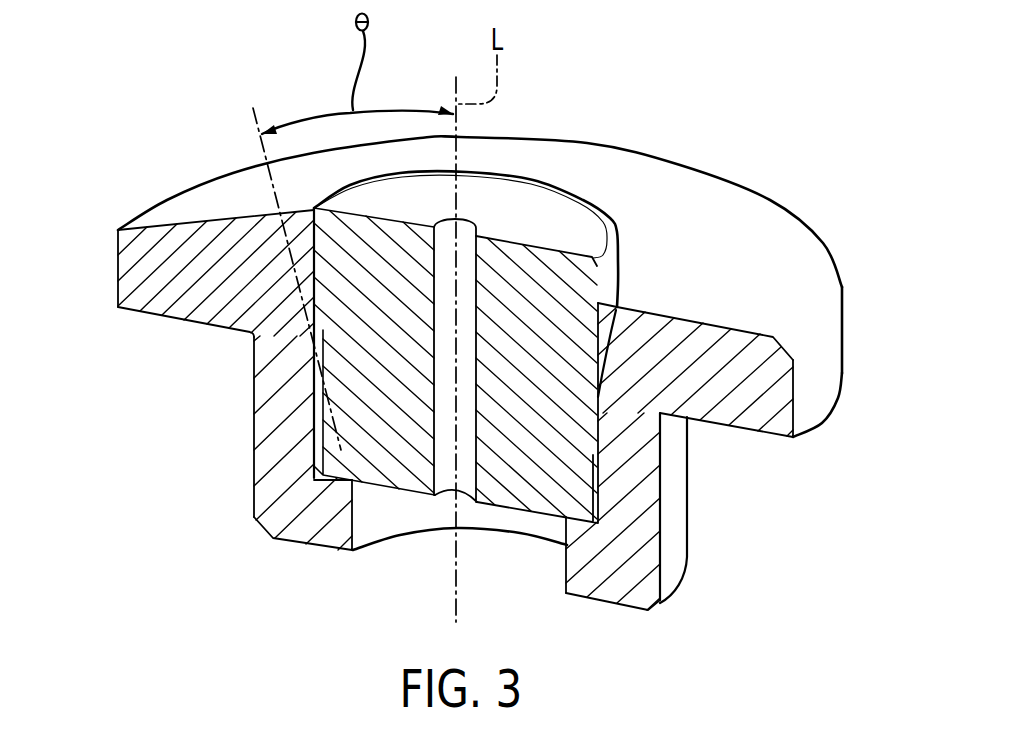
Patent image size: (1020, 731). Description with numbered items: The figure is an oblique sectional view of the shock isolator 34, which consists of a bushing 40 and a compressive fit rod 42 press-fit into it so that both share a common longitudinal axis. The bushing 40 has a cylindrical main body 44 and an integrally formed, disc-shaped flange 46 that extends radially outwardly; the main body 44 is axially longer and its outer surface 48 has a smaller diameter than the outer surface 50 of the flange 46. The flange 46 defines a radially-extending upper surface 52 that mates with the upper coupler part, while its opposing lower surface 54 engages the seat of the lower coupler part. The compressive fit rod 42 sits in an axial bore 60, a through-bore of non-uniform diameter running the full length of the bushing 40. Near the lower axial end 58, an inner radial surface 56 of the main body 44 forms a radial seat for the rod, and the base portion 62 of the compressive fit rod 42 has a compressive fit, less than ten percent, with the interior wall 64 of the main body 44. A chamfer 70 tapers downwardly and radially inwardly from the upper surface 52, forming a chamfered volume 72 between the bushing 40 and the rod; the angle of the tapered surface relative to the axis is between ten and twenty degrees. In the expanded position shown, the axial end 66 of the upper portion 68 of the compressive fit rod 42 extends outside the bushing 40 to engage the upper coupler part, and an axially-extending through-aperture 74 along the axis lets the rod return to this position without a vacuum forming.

The shock isolator 34 is at (262, 95).
The bushing 40 is at (195, 258).
The compressive fit rod 42 is at (332, 225).
The main body 44 is at (290, 398).
The flange 46 is at (147, 277).
The outer surface 48 is at (686, 480).
The outer surface 50 is at (812, 373).
The upper surface 52 is at (778, 273).
The lower surface 54 is at (183, 318).
The inner radial surface 56 is at (338, 476).
The lower axial end 58 is at (335, 535).
The axial bore 60 is at (422, 513).
The base portion 62 is at (550, 495).
The interior wall 64 is at (652, 494).
The axial end 66 is at (560, 218).
The upper portion 68 is at (616, 310).
The chamfer 70 is at (613, 328).
The chamfered volume 72 is at (300, 260).
The axially-extending through-aperture 74 is at (470, 220).